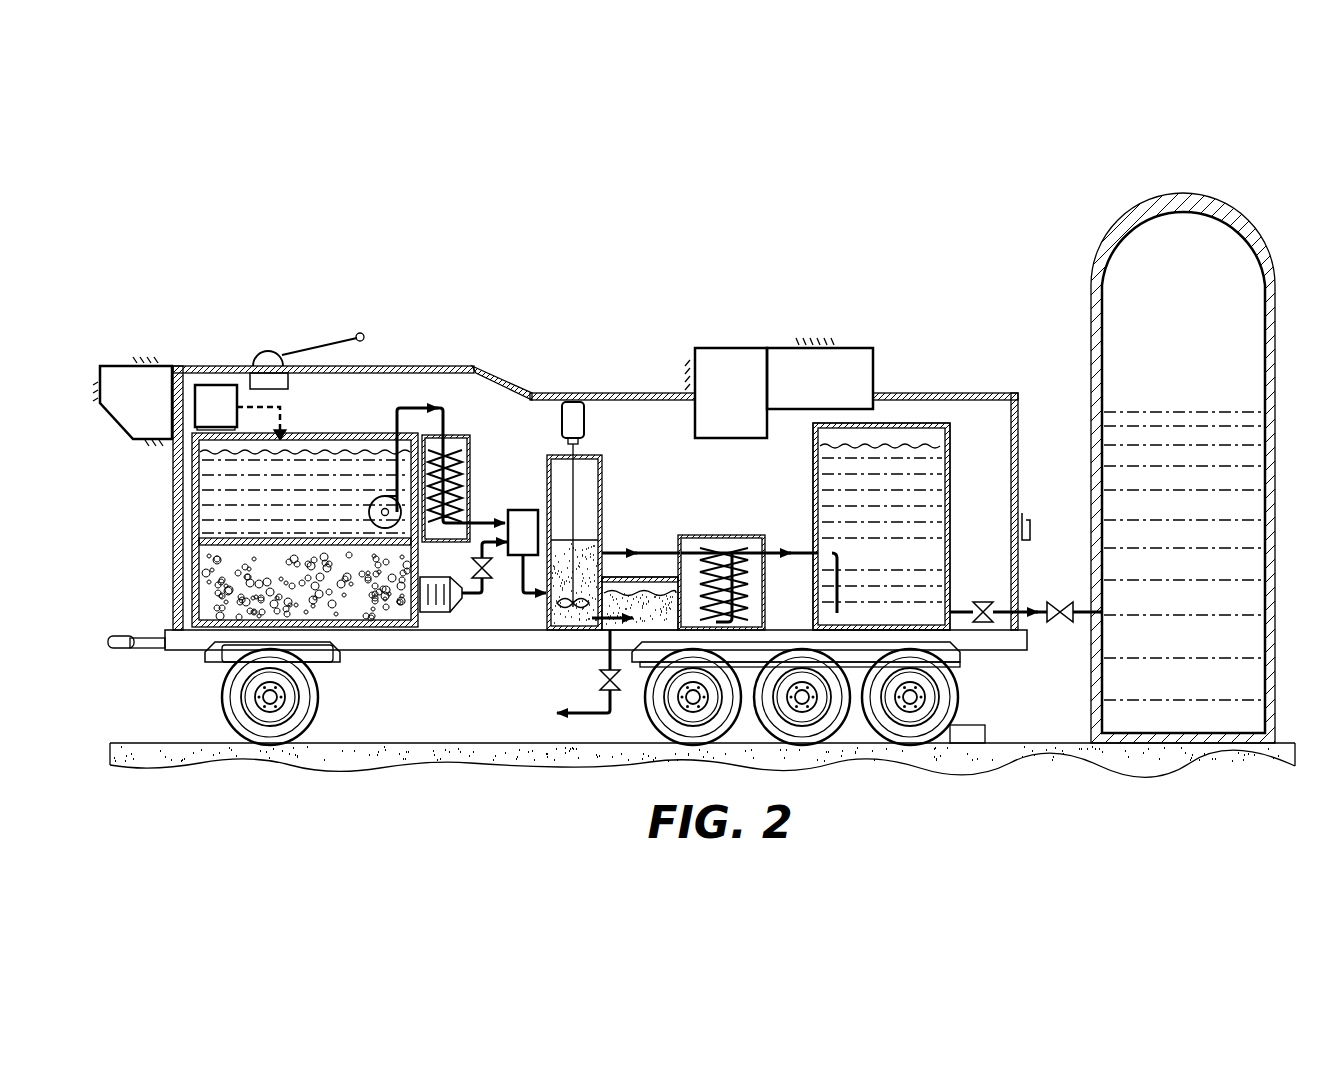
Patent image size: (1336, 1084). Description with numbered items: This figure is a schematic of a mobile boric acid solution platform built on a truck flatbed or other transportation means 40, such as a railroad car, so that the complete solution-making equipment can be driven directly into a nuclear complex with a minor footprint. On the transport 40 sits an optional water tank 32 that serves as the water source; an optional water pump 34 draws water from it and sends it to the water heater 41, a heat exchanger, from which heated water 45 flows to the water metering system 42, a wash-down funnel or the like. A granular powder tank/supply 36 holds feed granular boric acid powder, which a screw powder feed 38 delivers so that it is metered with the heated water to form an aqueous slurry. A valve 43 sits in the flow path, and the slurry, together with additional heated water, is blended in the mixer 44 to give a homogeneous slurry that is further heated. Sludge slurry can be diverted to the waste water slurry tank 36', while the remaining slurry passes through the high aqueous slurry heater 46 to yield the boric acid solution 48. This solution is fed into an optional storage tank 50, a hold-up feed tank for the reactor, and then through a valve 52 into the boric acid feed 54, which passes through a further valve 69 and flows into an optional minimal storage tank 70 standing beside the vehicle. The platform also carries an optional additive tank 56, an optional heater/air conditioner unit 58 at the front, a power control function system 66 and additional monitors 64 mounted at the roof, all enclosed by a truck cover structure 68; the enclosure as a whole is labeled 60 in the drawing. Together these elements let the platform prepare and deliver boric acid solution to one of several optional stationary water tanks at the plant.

The water tank 32 is at (330, 458).
The water pump 34 is at (385, 496).
The granular powder tank/supply 36 is at (273, 579).
The waste water slurry tank 36' is at (645, 564).
The screw powder feed 38 is at (432, 614).
The transportation means 40 is at (478, 652).
The water heater 41 is at (468, 465).
The water metering system 42 is at (522, 510).
The valve 43 is at (487, 575).
The mixer 44 is at (592, 548).
The heated water 45 is at (488, 520).
The high aqueous slurry heater 46 is at (720, 535).
The boric acid solution 48 is at (830, 518).
The storage tank 50 is at (950, 525).
The valve 52 is at (983, 600).
The boric acid feed 54 is at (1023, 606).
The additive tank 56 is at (215, 384).
The heater/air conditioner unit 58 is at (118, 362).
The housing 60 is at (636, 367).
The additional monitors 64 is at (727, 347).
The power control function system 66 is at (847, 347).
The truck cover structure 68 is at (441, 365).
The valve 69 is at (1060, 624).
The minimal storage tank 70 is at (1197, 375).